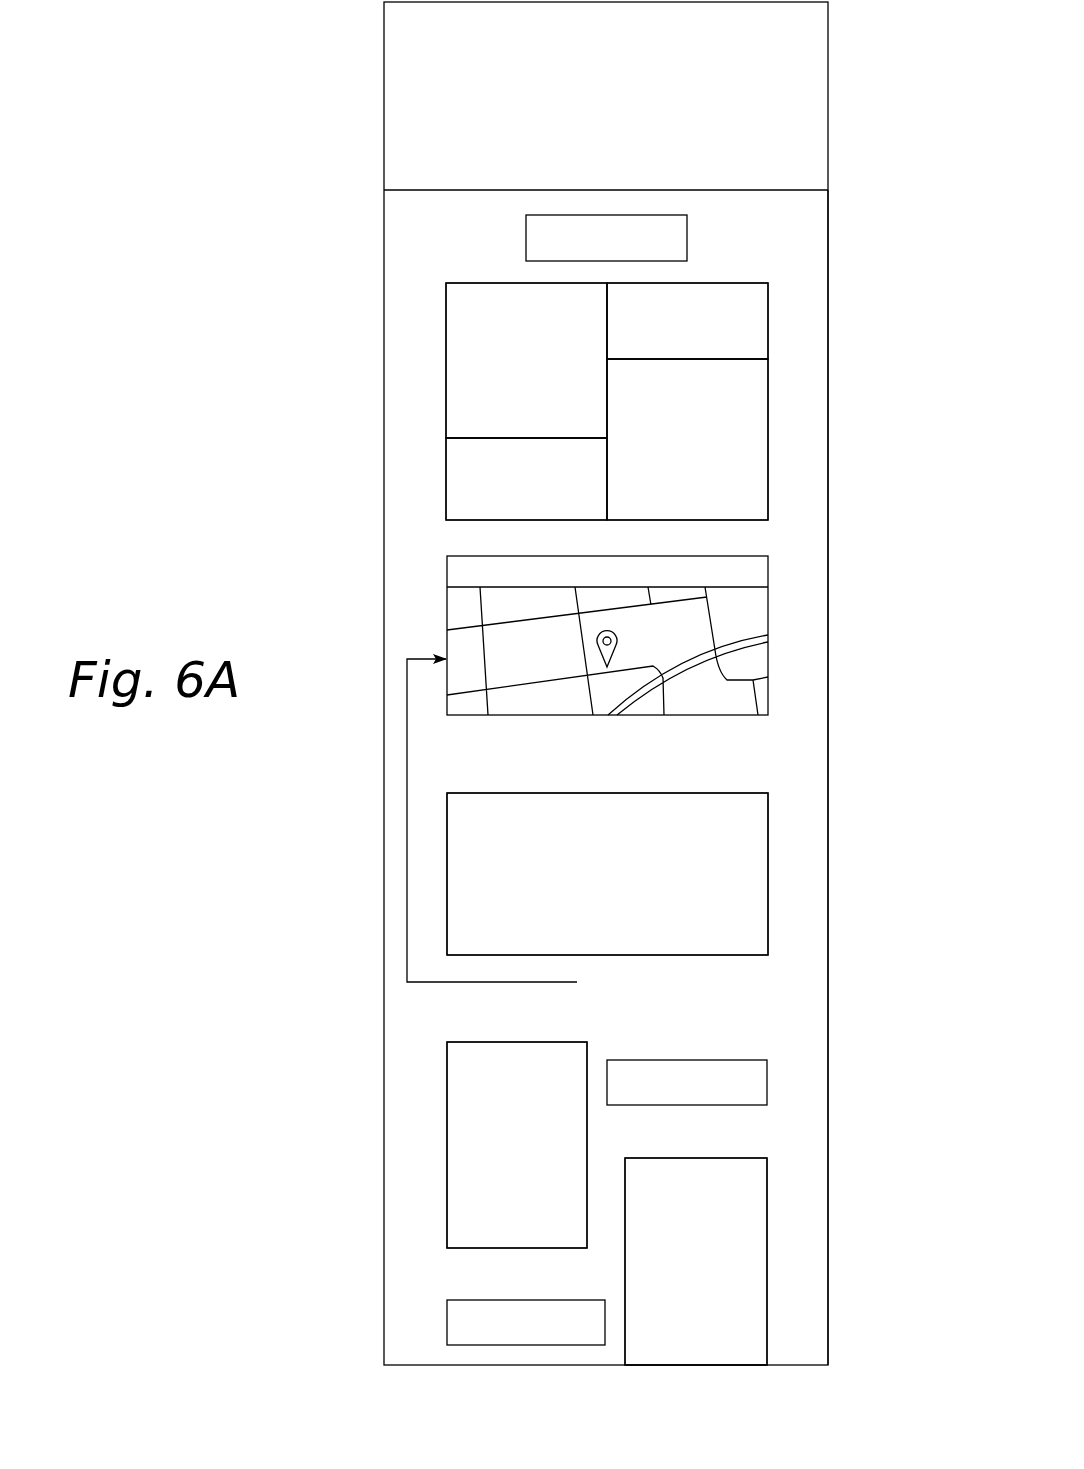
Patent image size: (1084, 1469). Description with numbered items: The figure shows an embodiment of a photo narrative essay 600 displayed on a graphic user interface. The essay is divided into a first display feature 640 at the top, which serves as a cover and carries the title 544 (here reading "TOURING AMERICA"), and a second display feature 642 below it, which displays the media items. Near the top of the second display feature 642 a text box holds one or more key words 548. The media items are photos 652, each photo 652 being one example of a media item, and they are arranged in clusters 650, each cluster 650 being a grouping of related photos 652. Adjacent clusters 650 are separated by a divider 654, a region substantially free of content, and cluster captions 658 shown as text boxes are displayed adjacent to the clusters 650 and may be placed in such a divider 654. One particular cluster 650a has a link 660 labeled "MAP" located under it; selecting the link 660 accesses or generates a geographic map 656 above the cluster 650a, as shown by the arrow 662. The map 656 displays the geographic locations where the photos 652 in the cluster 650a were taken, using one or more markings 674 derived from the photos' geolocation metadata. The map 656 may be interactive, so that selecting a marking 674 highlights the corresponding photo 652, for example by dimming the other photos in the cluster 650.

The photo narrative essay 600 is at (246, 103).
The title 544 is at (469, 152).
The key words 548 is at (526, 238).
The first display feature 640 is at (821, 121).
The second display feature 642 is at (821, 226).
The cluster 650 is at (772, 414).
The cluster 650a is at (772, 871).
The photo 652 is at (501, 376).
The divider 654 is at (770, 538).
The geographic map 656 is at (510, 659).
The marking 674 is at (618, 640).
The arrow 662 is at (407, 758).
The link 660 is at (640, 985).
The cluster caption 658 is at (687, 1060).